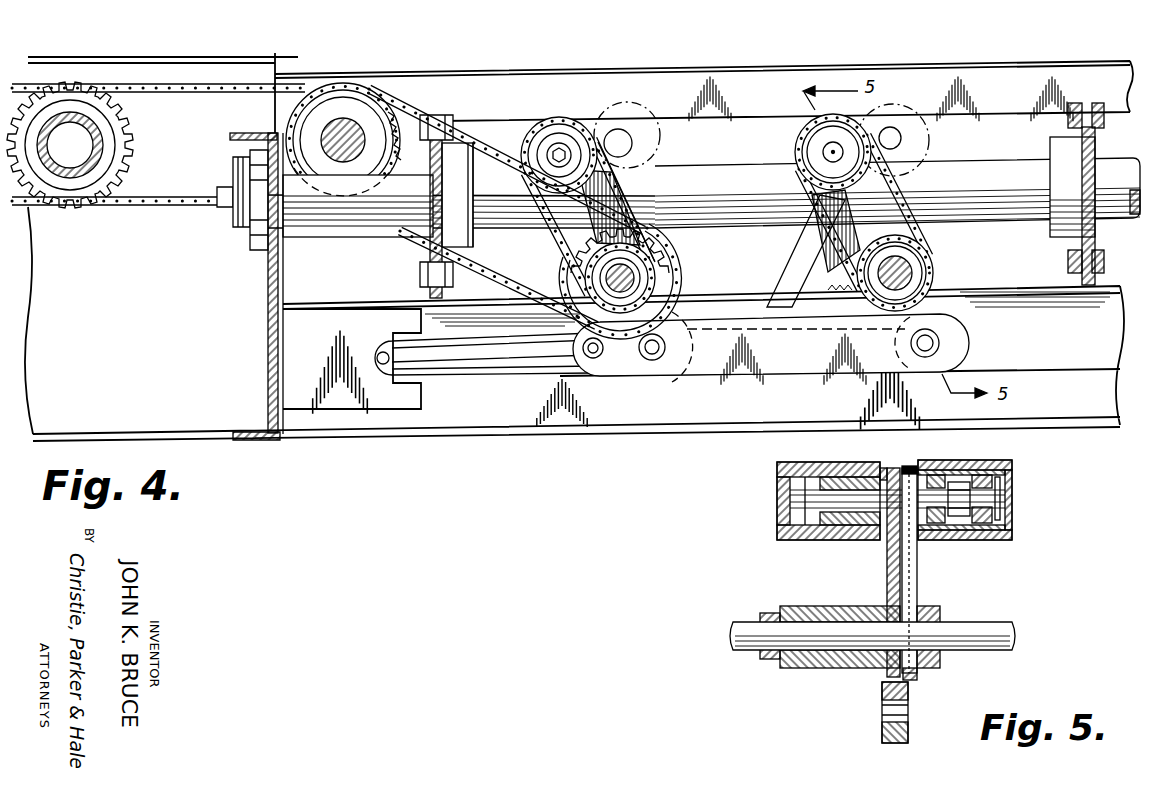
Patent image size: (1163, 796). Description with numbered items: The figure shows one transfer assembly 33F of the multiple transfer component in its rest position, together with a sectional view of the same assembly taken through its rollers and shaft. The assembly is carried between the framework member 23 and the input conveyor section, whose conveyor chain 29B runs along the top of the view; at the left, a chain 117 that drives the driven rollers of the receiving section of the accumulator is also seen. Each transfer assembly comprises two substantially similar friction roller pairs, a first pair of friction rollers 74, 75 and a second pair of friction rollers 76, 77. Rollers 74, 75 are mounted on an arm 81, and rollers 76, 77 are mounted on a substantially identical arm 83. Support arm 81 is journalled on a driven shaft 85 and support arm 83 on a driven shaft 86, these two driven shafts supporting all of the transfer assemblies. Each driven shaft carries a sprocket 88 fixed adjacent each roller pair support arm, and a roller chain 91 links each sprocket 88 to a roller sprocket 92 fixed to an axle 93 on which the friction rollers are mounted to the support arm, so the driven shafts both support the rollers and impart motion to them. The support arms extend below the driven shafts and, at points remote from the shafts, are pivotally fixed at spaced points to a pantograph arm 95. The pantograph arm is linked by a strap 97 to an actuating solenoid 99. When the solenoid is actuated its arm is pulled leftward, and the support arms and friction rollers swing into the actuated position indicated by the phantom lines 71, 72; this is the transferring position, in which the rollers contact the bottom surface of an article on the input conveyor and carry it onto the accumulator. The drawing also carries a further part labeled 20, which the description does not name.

In FIG. 4, the support post 20 is at (1087, 106).
In FIG. 4, the framework member 23 is at (268, 311).
In FIG. 4, the conveyor chain 29B is at (446, 116).
In FIG. 4, the transfer assembly 33F is at (735, 103).
In FIG. 4, the phantom line 71 is at (898, 103).
In FIG. 4, the phantom line 72 is at (618, 105).
In FIG. 5, the friction roller 74 is at (980, 462).
In FIG. 4, the friction roller 75 is at (800, 136).
In FIG. 5, the friction roller 75 is at (800, 462).
In FIG. 4, the friction roller 76 is at (593, 120).
In FIG. 4, the friction roller 77 is at (554, 115).
In FIG. 4, the support arm 81 is at (810, 189).
In FIG. 5, the support arm 81 is at (887, 570).
In FIG. 4, the support arm 83 is at (597, 202).
In FIG. 4, the driven shaft 85 is at (938, 258).
In FIG. 5, the driven shaft 85 is at (967, 623).
In FIG. 4, the driven shaft 86 is at (628, 282).
In FIG. 4, the sprocket 88 is at (671, 240).
In FIG. 5, the sprocket 88 is at (917, 680).
In FIG. 4, the roller chain 91 is at (915, 190).
In FIG. 5, the roller chain 91 is at (913, 572).
In FIG. 4, the roller sprocket 92 is at (628, 176).
In FIG. 5, the roller sprocket 92 is at (910, 467).
In FIG. 5, the axle 93 is at (980, 493).
In FIG. 4, the pantograph arm 95 is at (758, 366).
In FIG. 5, the pantograph arm 95 is at (882, 732).
In FIG. 4, the strap 97 is at (467, 356).
In FIG. 4, the actuating solenoid 99 is at (341, 397).
In FIG. 4, the chain 117 is at (187, 90).